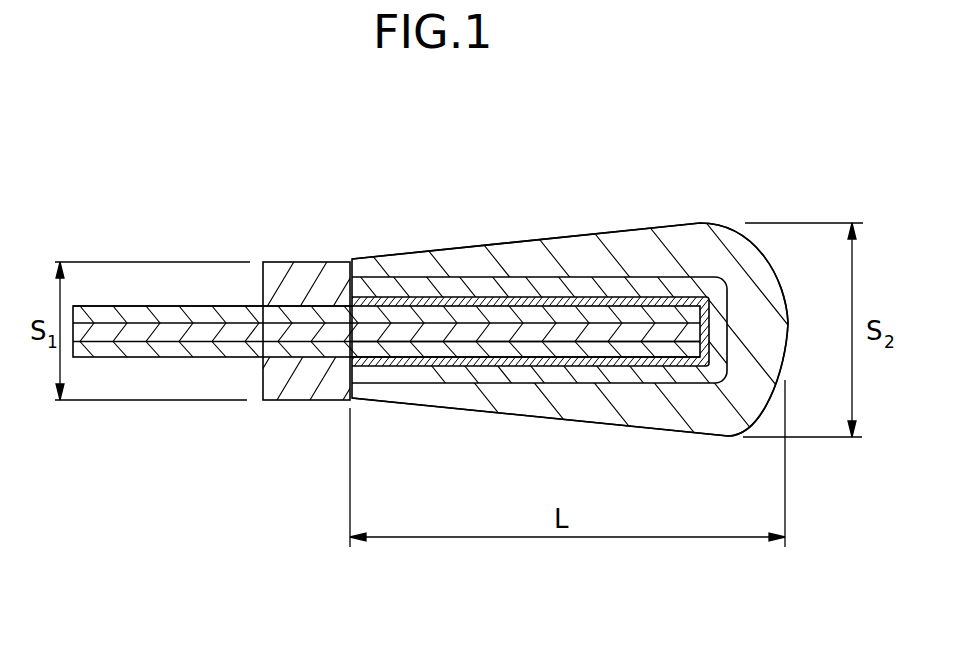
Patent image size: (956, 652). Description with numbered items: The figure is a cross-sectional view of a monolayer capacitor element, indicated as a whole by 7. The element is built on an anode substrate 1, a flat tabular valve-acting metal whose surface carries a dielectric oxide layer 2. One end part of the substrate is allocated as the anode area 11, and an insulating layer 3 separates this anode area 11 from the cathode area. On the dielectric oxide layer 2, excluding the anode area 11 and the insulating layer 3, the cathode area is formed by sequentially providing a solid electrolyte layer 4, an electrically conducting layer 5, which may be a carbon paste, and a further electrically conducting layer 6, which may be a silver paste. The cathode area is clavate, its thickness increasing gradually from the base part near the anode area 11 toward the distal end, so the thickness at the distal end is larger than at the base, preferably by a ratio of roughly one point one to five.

The anode substrate 1 is at (167, 333).
The anode area 11 is at (193, 306).
The dielectric oxide layer 2 is at (423, 348).
The insulating layer 3 is at (318, 283).
The solid electrolyte layer 4 is at (675, 357).
The electrically conducting layer 5 is at (612, 372).
The electrically conducting layer 6 is at (700, 250).
The holder assembly 7 is at (570, 226).